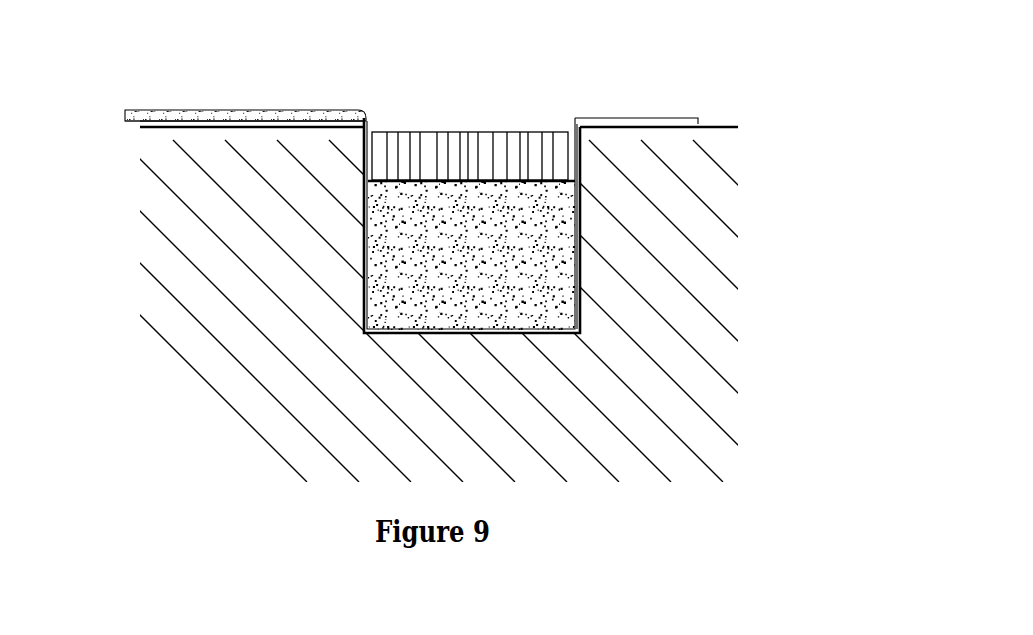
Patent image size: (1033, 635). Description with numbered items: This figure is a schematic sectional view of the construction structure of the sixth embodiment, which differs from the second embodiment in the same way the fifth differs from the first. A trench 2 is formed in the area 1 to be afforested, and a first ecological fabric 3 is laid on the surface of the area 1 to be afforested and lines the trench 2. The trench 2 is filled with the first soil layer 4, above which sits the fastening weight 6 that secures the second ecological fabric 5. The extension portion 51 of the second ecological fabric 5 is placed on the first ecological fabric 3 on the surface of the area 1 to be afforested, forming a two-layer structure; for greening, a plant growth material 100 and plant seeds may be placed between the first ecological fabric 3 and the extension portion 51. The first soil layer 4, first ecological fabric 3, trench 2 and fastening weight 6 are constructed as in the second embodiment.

The plant growth material 100 is at (167, 112).
The area to be afforested 1 is at (248, 127).
The trench 2 is at (580, 260).
The first ecological fabric 3 is at (216, 120).
The first soil layer 4 is at (437, 220).
The second ecological fabric 5 is at (580, 197).
The extension portion 51 is at (288, 118).
The fastening weight 6 is at (510, 132).